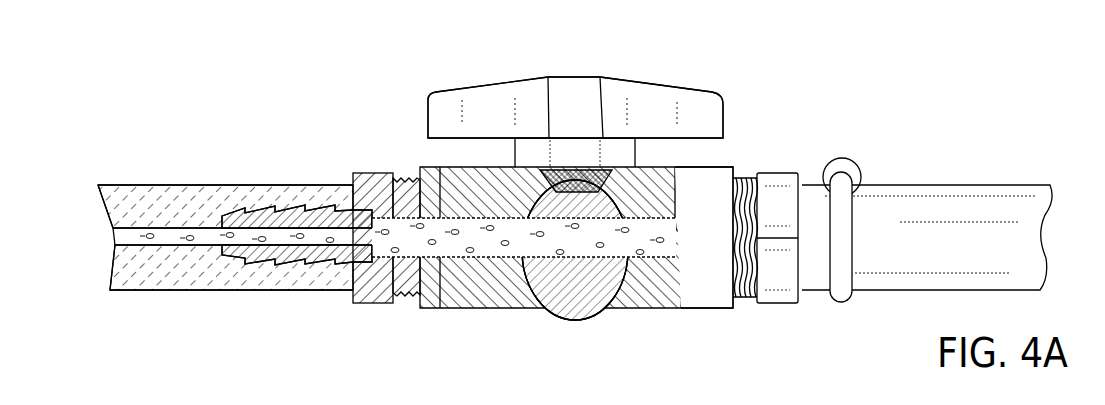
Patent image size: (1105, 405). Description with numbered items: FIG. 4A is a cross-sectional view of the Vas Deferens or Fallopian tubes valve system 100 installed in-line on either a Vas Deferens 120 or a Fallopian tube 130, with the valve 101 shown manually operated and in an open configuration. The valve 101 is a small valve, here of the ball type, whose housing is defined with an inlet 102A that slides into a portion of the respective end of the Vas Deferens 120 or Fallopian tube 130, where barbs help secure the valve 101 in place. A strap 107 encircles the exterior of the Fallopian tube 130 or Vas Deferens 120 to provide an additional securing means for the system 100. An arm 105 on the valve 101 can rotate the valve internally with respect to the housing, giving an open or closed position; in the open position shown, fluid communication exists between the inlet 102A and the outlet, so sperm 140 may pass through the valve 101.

The Vas Deferens or Fallopian tubes valve system 100 is at (765, 126).
The valve 101 is at (600, 283).
The inlet 102A is at (217, 236).
The arm 105 is at (543, 87).
The strap 107 is at (842, 160).
The Vas Deferens 120 is at (281, 181).
The Fallopian tube 130 is at (263, 185).
The sperm 140 is at (508, 248).